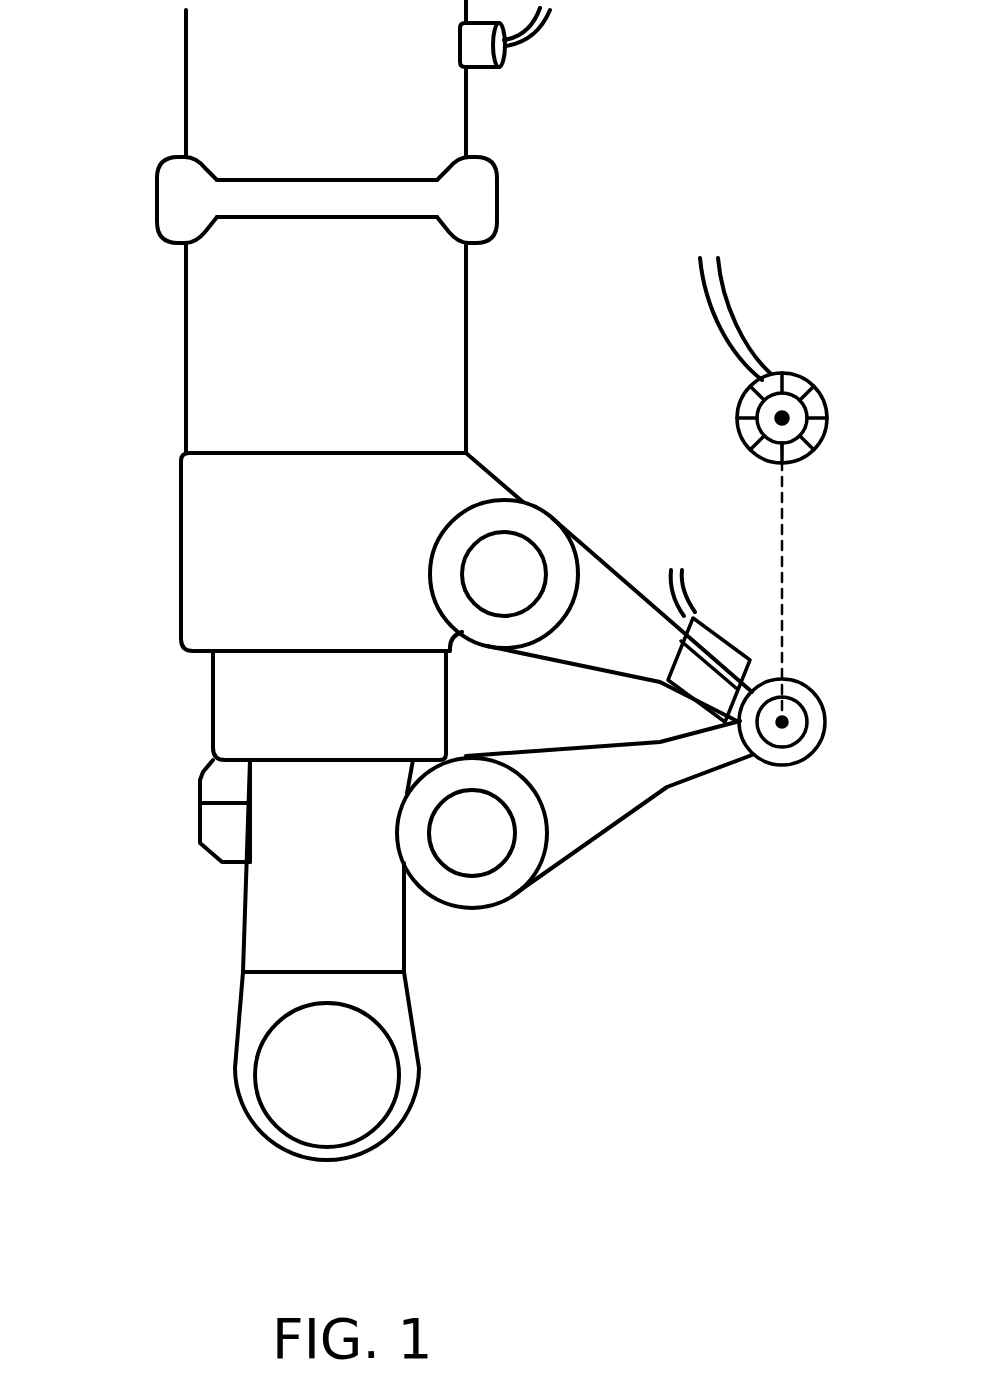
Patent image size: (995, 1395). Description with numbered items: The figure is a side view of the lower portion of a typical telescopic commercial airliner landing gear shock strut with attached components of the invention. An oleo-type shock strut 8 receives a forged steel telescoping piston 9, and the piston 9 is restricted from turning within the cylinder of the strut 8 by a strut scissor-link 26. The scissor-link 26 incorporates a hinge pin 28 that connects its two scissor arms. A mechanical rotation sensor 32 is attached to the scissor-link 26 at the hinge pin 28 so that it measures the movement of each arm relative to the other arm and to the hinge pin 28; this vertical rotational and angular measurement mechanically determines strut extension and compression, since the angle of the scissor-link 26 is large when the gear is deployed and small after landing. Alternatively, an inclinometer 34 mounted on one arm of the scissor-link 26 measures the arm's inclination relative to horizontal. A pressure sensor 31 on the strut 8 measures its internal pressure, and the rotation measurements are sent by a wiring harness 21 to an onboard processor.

The oleo-type shock strut 8 is at (237, 107).
The telescoping piston 9 is at (240, 718).
The wiring harness 21 is at (532, 38).
The strut scissor-link 26 is at (592, 780).
The hinge pin 28 is at (785, 738).
The pressure sensor 31 is at (477, 50).
The mechanical rotation sensor 32 is at (740, 437).
The inclinometer 34 is at (715, 647).